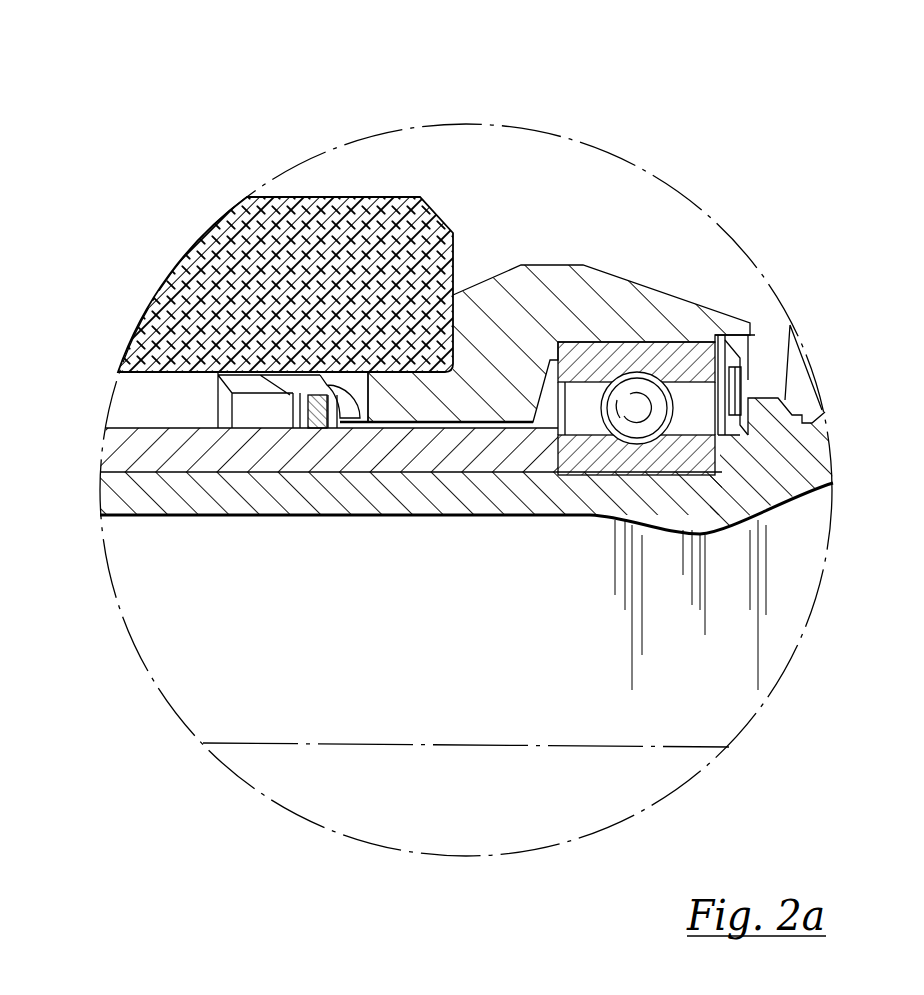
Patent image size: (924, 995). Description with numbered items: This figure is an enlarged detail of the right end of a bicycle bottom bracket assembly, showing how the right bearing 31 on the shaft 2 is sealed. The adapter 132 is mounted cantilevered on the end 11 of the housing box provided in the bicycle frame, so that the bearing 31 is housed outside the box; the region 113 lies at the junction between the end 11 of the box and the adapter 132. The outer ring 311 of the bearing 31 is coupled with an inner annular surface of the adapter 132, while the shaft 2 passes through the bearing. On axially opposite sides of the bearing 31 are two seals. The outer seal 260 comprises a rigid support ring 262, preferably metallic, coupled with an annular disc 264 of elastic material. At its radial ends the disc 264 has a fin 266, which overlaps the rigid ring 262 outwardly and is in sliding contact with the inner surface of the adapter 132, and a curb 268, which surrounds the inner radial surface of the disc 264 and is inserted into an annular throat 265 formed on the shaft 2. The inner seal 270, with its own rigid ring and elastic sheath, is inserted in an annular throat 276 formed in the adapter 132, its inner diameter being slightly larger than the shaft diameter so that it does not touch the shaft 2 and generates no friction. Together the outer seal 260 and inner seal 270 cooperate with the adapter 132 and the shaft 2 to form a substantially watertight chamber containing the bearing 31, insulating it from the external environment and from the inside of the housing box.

The shaft 2 is at (203, 505).
The end of the housing box 11 is at (388, 192).
The recess 113 is at (458, 256).
The adapter 132 is at (555, 275).
The outer ring 311 is at (595, 343).
The right bearing 31 is at (643, 397).
The fin 266 is at (745, 343).
The outer seal 260 is at (749, 345).
The annular disc 264 is at (748, 385).
The rigid support ring 262 is at (735, 385).
The curb 268 is at (747, 437).
The annular throat 265 is at (740, 444).
The inner seal 270 is at (312, 434).
The annular throat 276 is at (330, 388).